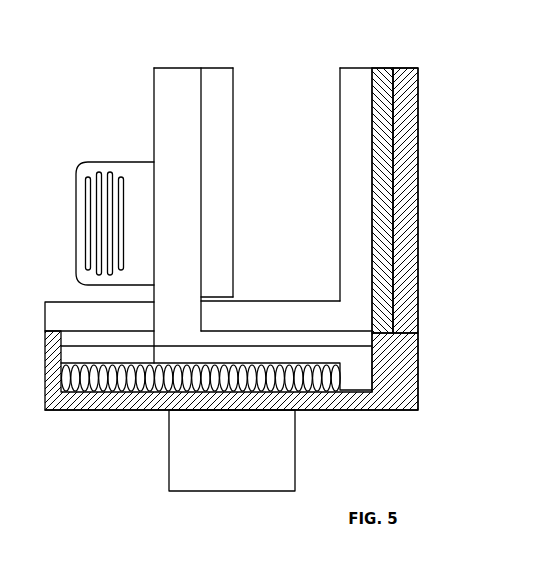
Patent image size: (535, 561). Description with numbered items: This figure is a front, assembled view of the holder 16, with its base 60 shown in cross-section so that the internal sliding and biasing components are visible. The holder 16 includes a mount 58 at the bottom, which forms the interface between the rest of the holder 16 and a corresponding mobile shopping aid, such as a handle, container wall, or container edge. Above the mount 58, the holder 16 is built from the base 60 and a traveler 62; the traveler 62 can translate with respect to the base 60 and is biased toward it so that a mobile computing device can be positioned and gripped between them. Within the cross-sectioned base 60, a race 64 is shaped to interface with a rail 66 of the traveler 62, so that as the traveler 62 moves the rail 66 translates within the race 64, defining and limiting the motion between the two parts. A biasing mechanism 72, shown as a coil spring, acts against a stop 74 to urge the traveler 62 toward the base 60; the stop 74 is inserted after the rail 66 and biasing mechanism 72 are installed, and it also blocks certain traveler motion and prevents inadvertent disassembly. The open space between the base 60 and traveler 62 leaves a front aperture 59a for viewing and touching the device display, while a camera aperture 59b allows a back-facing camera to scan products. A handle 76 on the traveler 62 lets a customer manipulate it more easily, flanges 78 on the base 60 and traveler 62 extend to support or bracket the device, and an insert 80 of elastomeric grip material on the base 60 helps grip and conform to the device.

The holder 16 is at (97, 62).
The mount 58 is at (224, 460).
The front aperture 59a is at (200, 158).
The camera aperture 59b is at (230, 115).
The base 60 is at (432, 185).
The traveler 62 is at (242, 125).
The race 64 is at (80, 356).
The rail 66 is at (325, 355).
The biasing mechanism 72 is at (302, 385).
The stop 74 is at (52, 392).
The handle 76 is at (88, 170).
The flange 78 is at (218, 80).
The insert 80 is at (384, 76).